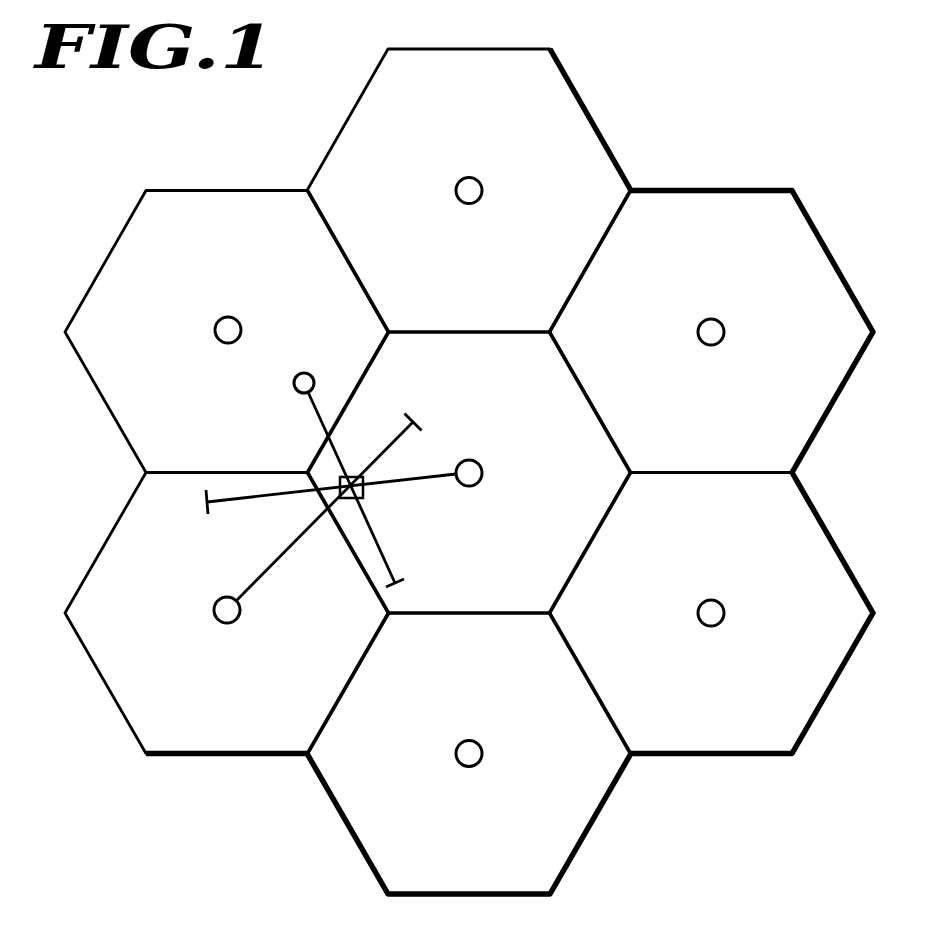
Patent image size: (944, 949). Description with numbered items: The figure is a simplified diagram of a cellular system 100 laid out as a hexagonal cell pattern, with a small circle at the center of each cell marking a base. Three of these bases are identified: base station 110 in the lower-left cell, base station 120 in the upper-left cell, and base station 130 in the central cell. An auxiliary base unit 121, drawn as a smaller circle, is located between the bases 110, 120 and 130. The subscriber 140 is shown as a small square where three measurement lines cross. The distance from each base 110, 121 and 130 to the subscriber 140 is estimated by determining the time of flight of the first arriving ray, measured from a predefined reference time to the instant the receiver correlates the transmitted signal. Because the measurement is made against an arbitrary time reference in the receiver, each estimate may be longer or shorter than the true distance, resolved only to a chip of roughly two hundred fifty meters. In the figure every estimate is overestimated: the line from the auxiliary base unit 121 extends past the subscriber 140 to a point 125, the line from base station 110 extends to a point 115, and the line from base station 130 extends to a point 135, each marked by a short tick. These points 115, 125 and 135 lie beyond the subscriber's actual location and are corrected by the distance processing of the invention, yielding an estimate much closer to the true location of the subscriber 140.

The cellular system 100 is at (81, 135).
The base station 110 is at (228, 624).
The point 115 is at (418, 425).
The base station 120 is at (215, 320).
The auxiliary base unit 121 is at (296, 391).
The point 125 is at (400, 583).
The base station 130 is at (479, 481).
The point 135 is at (198, 513).
The subscriber 140 is at (363, 492).